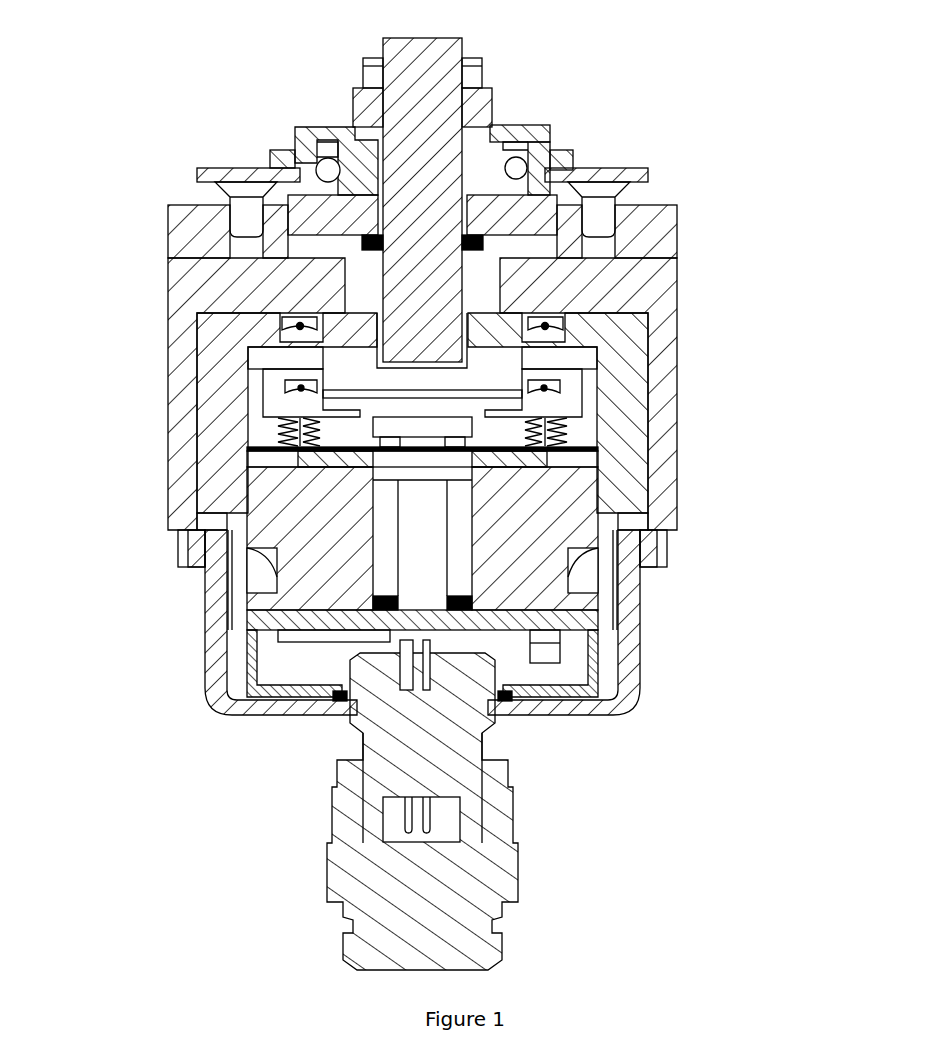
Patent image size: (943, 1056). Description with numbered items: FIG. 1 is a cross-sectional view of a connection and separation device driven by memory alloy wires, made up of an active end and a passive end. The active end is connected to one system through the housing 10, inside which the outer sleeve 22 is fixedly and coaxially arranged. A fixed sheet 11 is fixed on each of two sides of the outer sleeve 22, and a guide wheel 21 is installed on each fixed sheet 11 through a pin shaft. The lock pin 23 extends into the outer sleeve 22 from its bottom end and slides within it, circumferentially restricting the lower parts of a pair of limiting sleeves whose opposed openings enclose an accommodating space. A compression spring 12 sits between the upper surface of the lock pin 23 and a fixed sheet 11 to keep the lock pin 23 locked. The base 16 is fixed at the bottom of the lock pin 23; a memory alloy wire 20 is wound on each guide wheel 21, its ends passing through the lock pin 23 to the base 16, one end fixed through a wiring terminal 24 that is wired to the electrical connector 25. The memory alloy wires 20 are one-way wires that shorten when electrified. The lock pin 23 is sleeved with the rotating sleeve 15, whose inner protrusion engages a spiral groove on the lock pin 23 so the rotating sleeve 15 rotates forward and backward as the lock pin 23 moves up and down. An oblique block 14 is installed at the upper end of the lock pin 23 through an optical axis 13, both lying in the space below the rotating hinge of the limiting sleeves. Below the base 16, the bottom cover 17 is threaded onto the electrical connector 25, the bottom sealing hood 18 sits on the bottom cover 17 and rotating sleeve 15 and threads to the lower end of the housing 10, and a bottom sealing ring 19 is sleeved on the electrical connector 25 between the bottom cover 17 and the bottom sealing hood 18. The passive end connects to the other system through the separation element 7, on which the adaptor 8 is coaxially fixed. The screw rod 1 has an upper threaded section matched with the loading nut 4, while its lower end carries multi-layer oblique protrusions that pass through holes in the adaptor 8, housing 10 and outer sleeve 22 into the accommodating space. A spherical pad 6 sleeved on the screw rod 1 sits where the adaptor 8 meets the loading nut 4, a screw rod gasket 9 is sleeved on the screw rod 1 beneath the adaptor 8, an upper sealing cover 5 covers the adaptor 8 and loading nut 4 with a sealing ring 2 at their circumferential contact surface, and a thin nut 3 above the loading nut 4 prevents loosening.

The screw rod 1 is at (278, 189).
The sealing ring 2 is at (318, 138).
The thin nut 3 is at (583, 46).
The loading nut 4 is at (571, 91).
The upper sealing cover 5 is at (530, 150).
The spherical pad 6 is at (494, 201).
The separation element 7 is at (385, 229).
The adaptor 8 is at (499, 222).
The screw rod gasket 9 is at (573, 282).
The housing 10 is at (376, 394).
The fixed sheets 11 is at (346, 397).
The compression springs 12 is at (335, 449).
The optical axis 13 is at (334, 480).
The oblique block 14 is at (272, 543).
The rotating sleeve 15 is at (332, 625).
The base 16 is at (345, 622).
The bottom cover 17 is at (336, 705).
The bottom sealing hood 18 is at (358, 677).
The bottom sealing ring 19 is at (296, 793).
The memory alloy wires 20 is at (532, 352).
The guide wheels 21 is at (535, 414).
The outer sleeve 22 is at (490, 440).
The lock pin 23 is at (523, 538).
The wiring terminal 24 is at (665, 651).
The electrical connector 25 is at (564, 805).